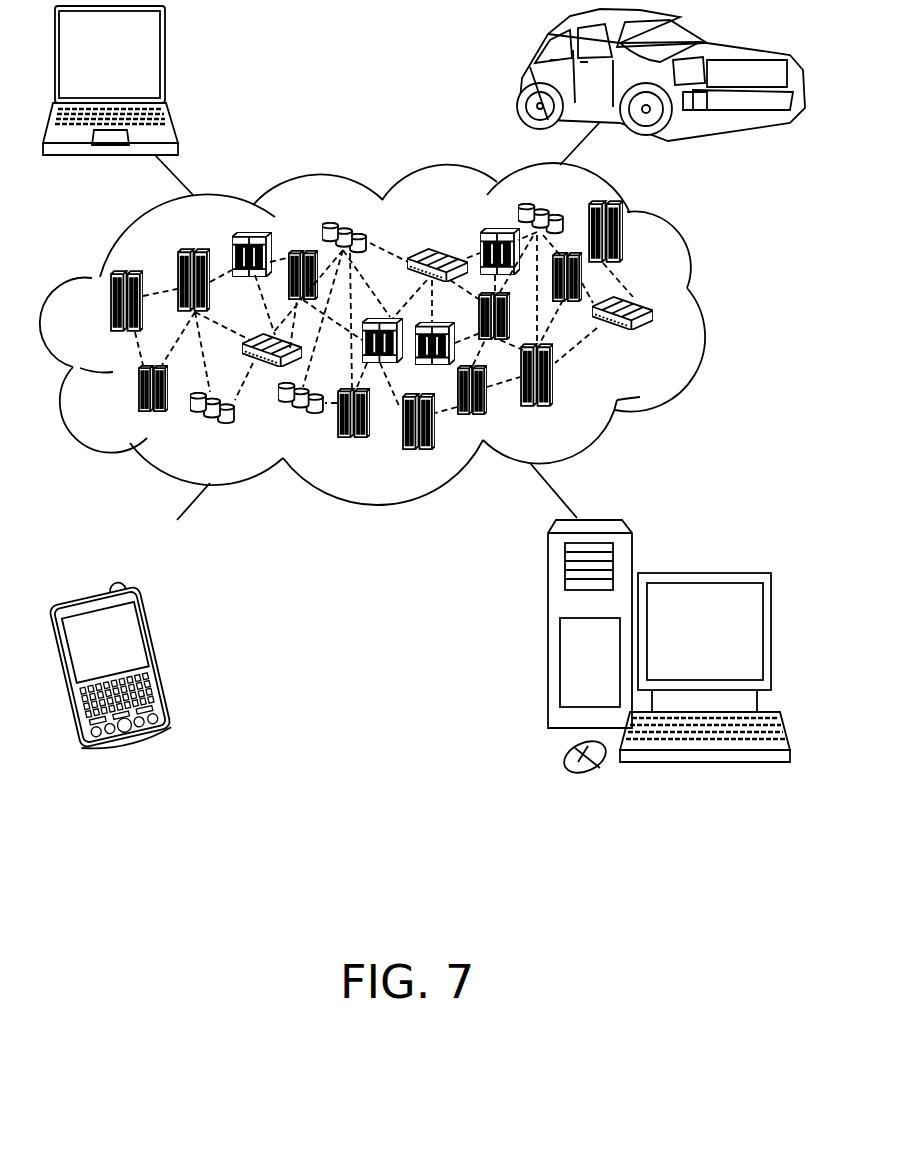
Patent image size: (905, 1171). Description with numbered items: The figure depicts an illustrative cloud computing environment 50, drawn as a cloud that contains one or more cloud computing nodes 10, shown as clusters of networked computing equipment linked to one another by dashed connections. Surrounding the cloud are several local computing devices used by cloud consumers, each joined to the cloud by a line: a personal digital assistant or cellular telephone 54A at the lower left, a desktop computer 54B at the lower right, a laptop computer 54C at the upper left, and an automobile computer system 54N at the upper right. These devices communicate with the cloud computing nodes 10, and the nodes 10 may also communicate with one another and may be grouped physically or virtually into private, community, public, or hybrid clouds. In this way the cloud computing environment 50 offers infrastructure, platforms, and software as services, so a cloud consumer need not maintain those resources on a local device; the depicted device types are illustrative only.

The laptop computer 54C is at (165, 60).
The automobile computer system 54N is at (522, 77).
The cloud computing environment 50 is at (396, 334).
The cloud computing node 10 is at (648, 343).
The personal digital assistant or cellular telephone 54A is at (158, 658).
The desktop computer 54B is at (703, 572).